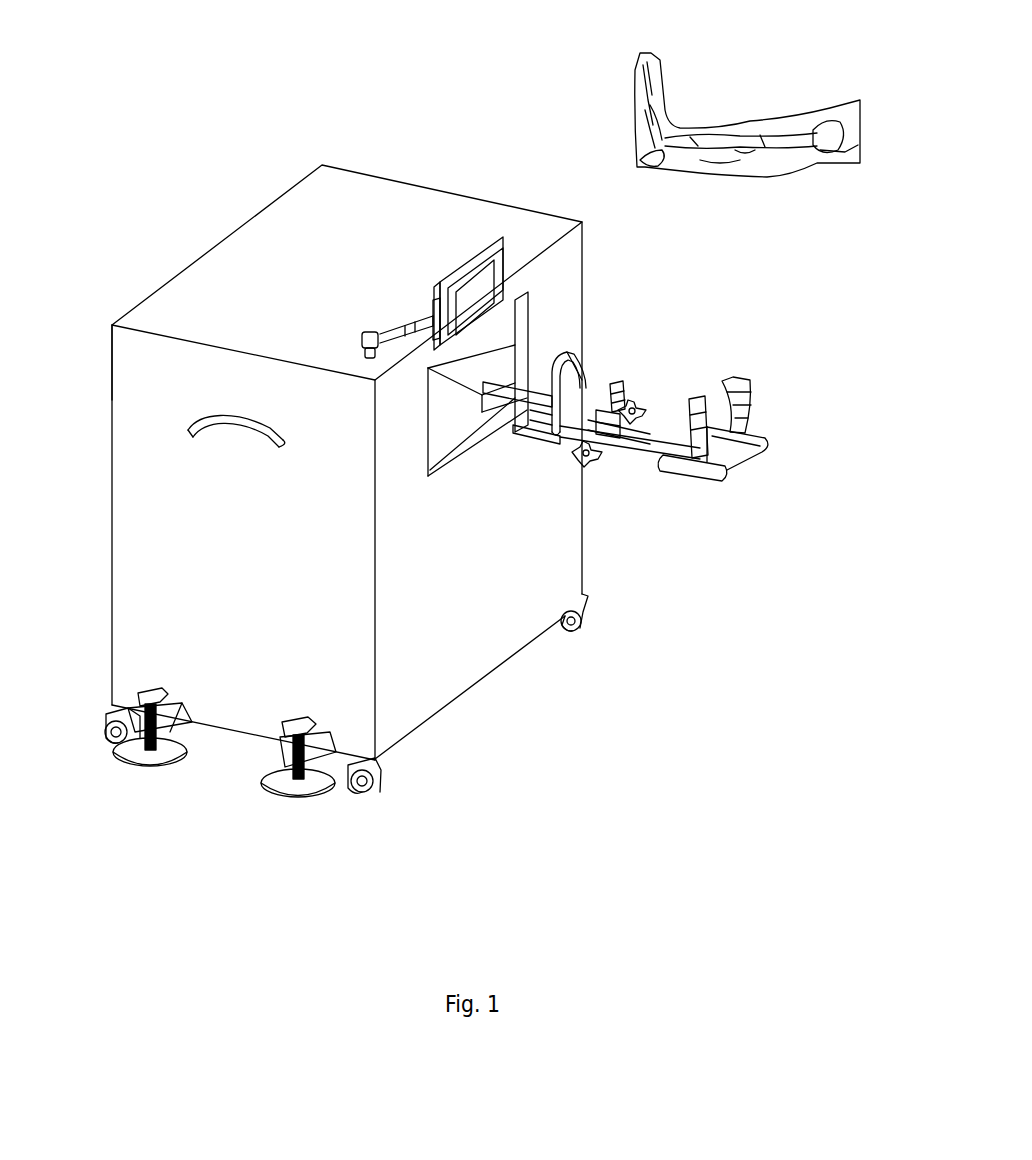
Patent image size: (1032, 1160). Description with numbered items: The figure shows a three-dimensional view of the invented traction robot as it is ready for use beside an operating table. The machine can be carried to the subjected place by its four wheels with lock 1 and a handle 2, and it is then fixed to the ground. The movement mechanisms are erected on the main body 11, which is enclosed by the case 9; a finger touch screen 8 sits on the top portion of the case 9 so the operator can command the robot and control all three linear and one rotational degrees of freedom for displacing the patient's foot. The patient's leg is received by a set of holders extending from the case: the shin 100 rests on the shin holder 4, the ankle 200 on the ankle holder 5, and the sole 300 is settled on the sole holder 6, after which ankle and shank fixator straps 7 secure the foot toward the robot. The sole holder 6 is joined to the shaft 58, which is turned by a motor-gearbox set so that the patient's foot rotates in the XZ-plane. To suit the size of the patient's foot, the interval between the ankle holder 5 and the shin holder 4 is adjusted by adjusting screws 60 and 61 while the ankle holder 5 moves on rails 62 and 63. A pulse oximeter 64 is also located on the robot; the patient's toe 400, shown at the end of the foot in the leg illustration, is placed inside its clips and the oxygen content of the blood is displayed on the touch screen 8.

The wheels with lock 1 is at (106, 738).
The handle 2 is at (188, 428).
The shin holder 4 is at (732, 480).
The ankle holder 5 is at (552, 440).
The sole holder 6 is at (567, 348).
The ankle and shank fixator straps 7 is at (615, 381).
The finger touch screen 8 is at (447, 278).
The case 9 is at (255, 272).
The main body 11 is at (110, 322).
The shaft 58 is at (536, 383).
The adjusting screw 60 is at (605, 470).
The adjusting screw 61 is at (636, 410).
The rail 62 is at (508, 437).
The rail 63 is at (528, 422).
The pulse oximeter 64 is at (567, 367).
The shin 100 is at (848, 170).
The ankle 200 is at (652, 180).
The sole 300 is at (705, 113).
The toes 400 is at (658, 48).